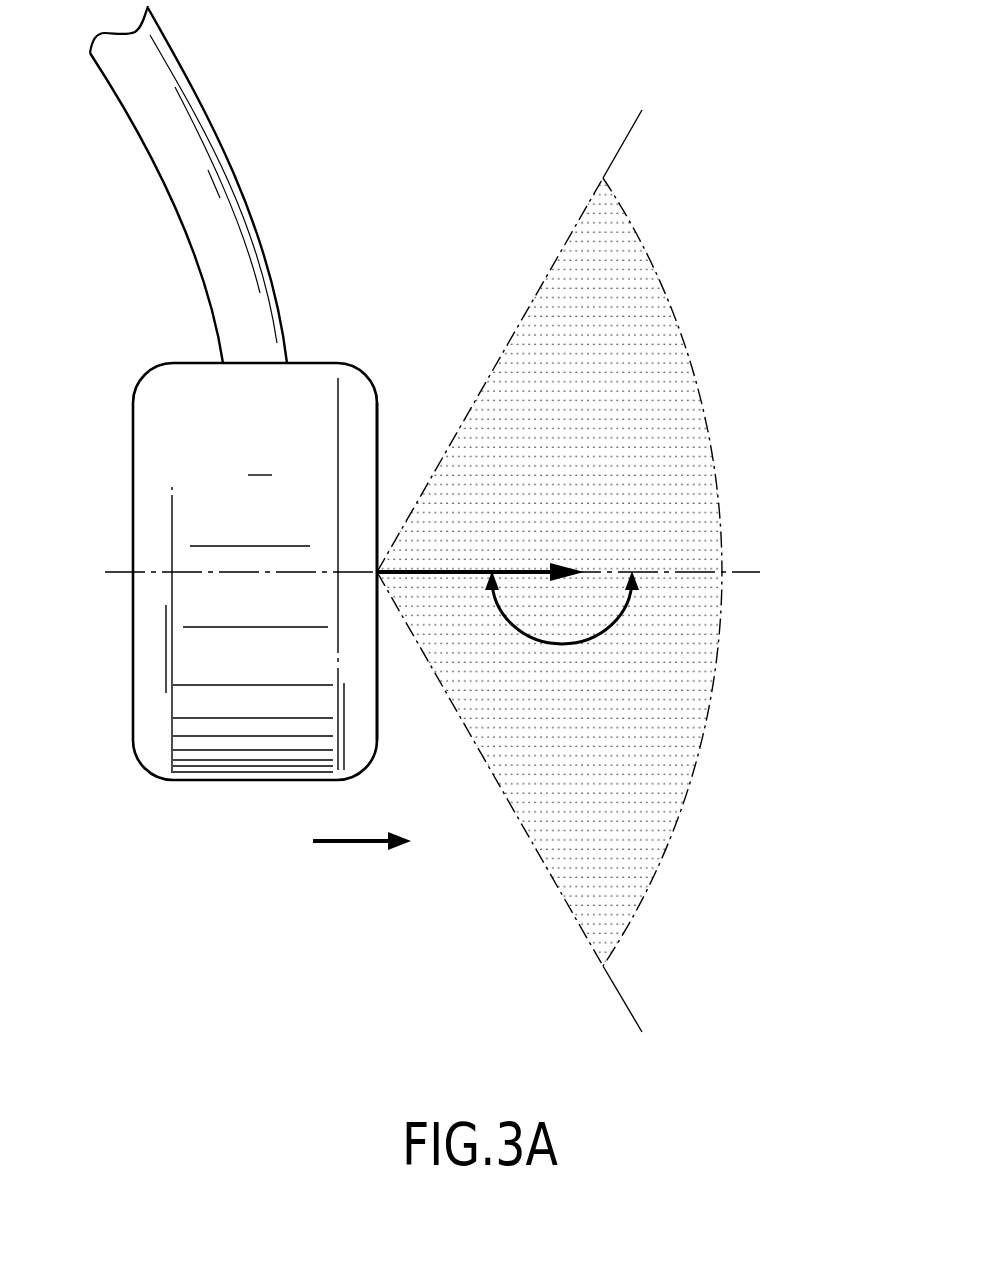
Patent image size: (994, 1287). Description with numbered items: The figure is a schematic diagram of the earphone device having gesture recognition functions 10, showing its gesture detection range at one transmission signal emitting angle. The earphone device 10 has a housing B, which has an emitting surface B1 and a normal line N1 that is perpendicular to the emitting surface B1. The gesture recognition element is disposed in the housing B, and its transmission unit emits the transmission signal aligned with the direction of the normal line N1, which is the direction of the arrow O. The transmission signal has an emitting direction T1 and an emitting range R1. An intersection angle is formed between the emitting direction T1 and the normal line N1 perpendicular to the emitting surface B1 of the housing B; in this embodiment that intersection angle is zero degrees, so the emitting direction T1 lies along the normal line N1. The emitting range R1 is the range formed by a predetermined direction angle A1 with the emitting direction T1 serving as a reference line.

The housing B is at (126, 439).
The emitting surface B1 is at (377, 438).
The earphone device having gesture recognition functions 10 is at (250, 802).
The normal line N1 is at (456, 573).
The emitting range R1 is at (705, 728).
The predetermined direction angle A1 is at (634, 574).
The emitting direction T1 is at (480, 547).
The arrow O is at (381, 842).